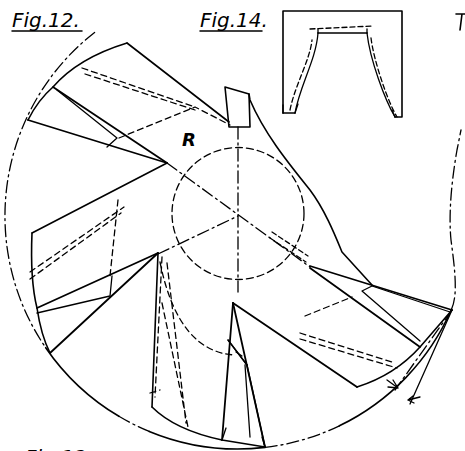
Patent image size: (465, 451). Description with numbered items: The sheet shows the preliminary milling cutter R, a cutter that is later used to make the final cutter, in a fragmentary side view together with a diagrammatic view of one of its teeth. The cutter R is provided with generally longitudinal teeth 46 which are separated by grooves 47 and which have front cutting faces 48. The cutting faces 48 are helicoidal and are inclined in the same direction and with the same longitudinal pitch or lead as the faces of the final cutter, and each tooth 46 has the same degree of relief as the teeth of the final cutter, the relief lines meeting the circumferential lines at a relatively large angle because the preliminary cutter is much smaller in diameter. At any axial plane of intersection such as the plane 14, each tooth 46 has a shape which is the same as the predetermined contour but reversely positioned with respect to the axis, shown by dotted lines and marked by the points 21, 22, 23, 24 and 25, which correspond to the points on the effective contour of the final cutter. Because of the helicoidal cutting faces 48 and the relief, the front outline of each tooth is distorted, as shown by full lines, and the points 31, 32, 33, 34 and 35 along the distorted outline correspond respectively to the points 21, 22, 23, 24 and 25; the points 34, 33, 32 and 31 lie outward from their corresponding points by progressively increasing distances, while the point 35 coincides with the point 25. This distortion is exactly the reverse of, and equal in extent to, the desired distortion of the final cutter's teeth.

In FIG. 12, the axial plane of intersection 14 is at (233, 287).
In FIG. 12, the teeth 46 is at (43, 238).
In FIG. 12, the grooves 47 is at (105, 385).
In FIG. 12, the front cutting faces 48 is at (88, 320).
In FIG. 14, the front cutting faces 48 is at (390, 62).
In FIG. 14, the point on contour at axial plane 21 is at (403, 110).
In FIG. 14, the point on contour at axial plane 22 is at (368, 31).
In FIG. 14, the point on contour at axial plane 23 is at (341, 21).
In FIG. 14, the point on contour at axial plane 24 is at (316, 32).
In FIG. 14, the point on contour at axial plane 25 is at (287, 111).
In FIG. 12, the point on distorted outline 31 is at (260, 447).
In FIG. 14, the point on distorted outline 31 is at (390, 121).
In FIG. 12, the point on distorted outline 32 is at (250, 368).
In FIG. 14, the point on distorted outline 32 is at (367, 34).
In FIG. 12, the point on distorted outline 33 is at (245, 357).
In FIG. 14, the point on distorted outline 33 is at (347, 34).
In FIG. 12, the point on distorted outline 34 is at (238, 352).
In FIG. 14, the point on distorted outline 34 is at (318, 34).
In FIG. 12, the point on distorted outline 35 is at (223, 437).
In FIG. 14, the point on distorted outline 35 is at (293, 110).